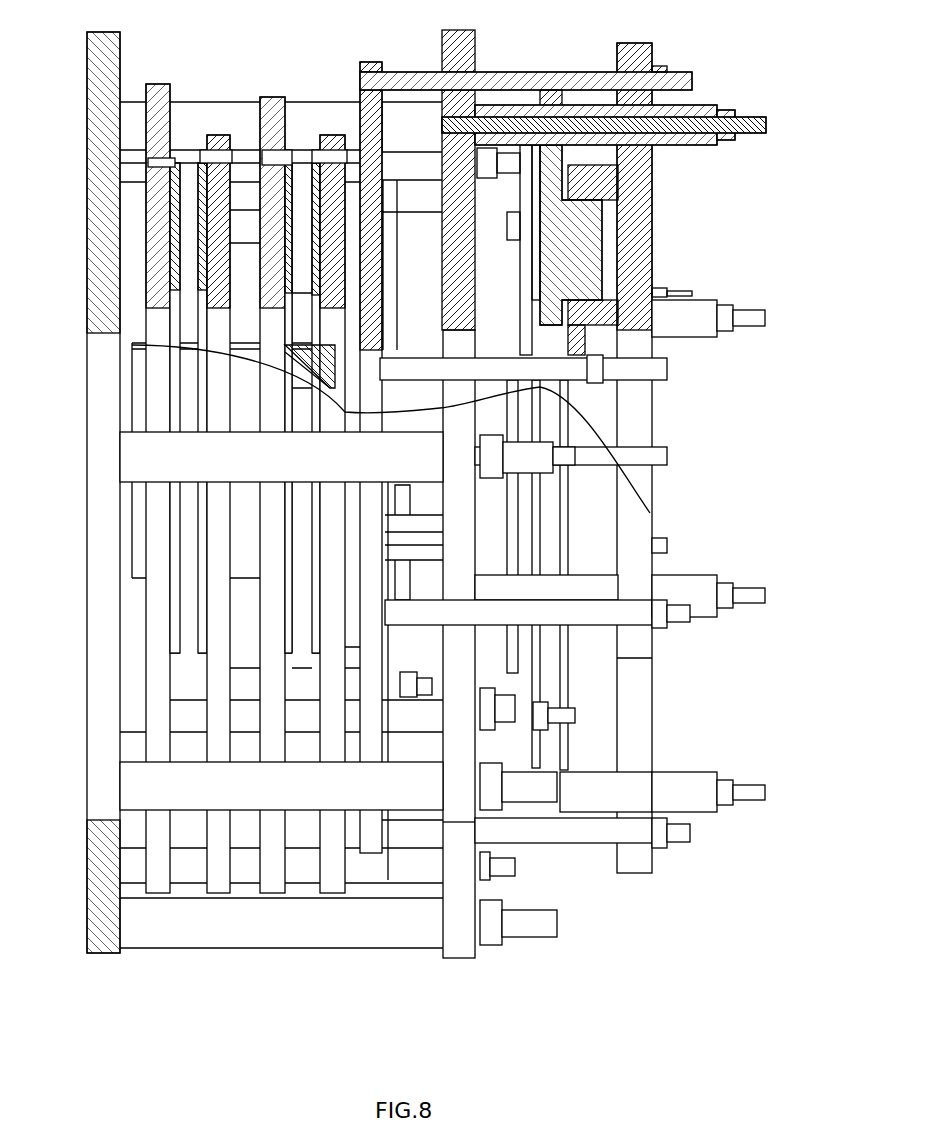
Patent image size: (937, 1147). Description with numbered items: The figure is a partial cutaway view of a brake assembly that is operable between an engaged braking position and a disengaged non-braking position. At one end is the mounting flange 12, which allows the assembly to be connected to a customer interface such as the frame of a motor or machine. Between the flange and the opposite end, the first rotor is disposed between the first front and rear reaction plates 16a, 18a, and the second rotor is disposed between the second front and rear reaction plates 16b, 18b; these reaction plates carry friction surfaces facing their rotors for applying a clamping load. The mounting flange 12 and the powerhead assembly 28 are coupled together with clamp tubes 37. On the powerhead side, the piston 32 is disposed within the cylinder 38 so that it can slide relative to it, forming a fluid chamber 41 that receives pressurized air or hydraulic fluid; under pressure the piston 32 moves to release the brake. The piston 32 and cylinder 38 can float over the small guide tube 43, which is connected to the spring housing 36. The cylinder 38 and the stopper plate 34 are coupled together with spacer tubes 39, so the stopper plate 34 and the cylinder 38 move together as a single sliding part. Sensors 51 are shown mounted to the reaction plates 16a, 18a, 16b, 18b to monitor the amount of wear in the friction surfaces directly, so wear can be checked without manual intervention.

The mounting flange 12 is at (108, 46).
The second rear reaction plate 18b is at (158, 97).
The second front reaction plate 16b is at (222, 139).
The first rear reaction plate 18a is at (282, 103).
The first front reaction plate 16a is at (336, 139).
The sensors 51 is at (200, 165).
The stopper plate 34 is at (375, 105).
The spring housing 36 is at (465, 47).
The spacer tubes 39 is at (600, 70).
The small guide tube 43 is at (700, 108).
The cylinder 38 is at (648, 197).
The piston 32 is at (590, 248).
The fluid chamber 41 is at (612, 283).
The clamp tubes 37 is at (140, 942).
The powerhead assembly 28 is at (446, 940).